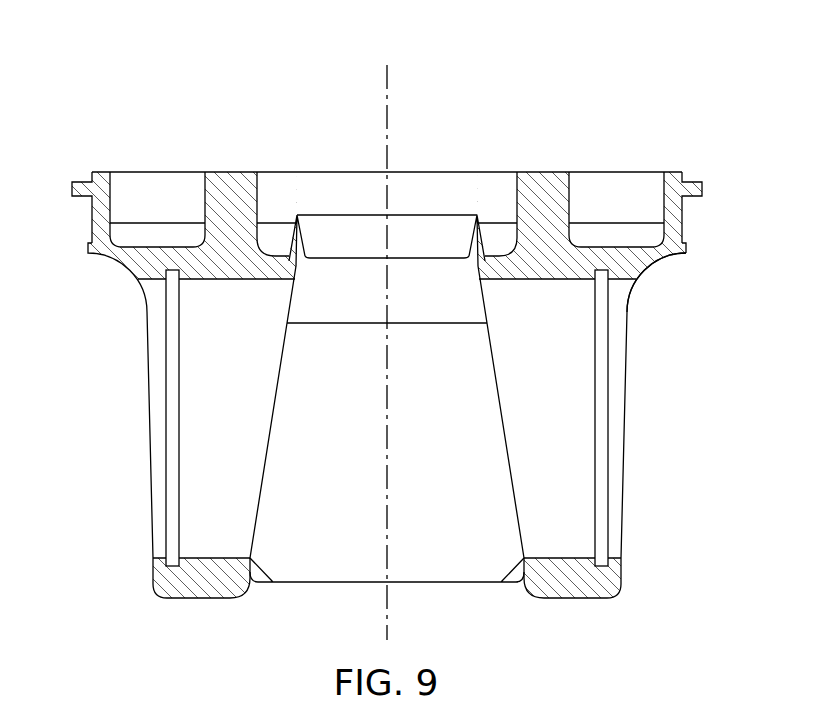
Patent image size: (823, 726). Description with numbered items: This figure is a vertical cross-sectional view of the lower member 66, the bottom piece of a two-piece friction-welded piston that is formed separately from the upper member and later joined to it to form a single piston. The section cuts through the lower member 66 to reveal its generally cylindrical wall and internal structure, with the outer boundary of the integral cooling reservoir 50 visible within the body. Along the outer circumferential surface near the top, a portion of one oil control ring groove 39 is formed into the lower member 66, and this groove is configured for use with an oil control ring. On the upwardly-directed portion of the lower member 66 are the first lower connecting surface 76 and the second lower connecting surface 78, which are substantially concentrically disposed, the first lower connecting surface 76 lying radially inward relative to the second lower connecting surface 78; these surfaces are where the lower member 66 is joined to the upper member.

The lower member 66 is at (647, 110).
The second lower connecting surface 78 is at (103, 172).
The first lower connecting surface 76 is at (233, 172).
The oil control ring groove 39 is at (693, 179).
The integral cooling reservoir 50 is at (370, 267).